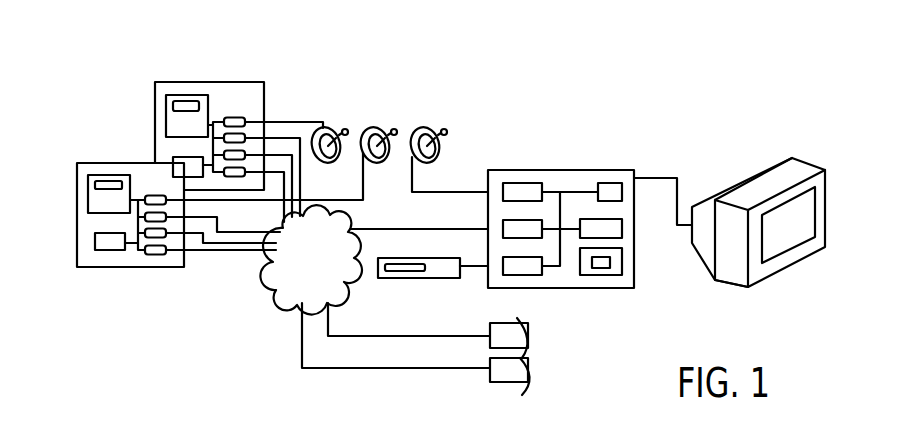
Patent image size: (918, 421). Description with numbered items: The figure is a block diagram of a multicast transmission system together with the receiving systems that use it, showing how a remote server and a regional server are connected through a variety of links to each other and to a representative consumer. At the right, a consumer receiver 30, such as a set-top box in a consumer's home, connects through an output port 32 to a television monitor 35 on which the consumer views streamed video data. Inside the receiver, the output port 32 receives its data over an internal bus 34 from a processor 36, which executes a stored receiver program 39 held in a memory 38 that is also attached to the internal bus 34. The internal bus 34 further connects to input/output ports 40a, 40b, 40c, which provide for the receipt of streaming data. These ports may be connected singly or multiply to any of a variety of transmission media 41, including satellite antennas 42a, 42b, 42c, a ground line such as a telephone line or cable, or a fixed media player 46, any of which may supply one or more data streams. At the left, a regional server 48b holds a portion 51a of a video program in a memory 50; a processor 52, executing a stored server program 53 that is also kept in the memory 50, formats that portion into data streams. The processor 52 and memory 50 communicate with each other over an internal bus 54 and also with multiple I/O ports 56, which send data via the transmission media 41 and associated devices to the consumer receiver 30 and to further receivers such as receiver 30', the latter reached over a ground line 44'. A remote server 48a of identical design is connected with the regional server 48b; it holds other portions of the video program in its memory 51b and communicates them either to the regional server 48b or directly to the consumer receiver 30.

The consumer receiver 30 is at (568, 235).
The receiver 30' is at (527, 331).
The output port 32 is at (608, 180).
The internal bus 34 is at (560, 250).
The television monitor 35 is at (772, 183).
The processor 36 is at (634, 228).
The memory 38 is at (626, 287).
The stored receiver program 39 is at (601, 270).
The input/output port 40a is at (520, 182).
The input/output port 40b is at (525, 219).
The input/output port 40c is at (520, 276).
The transmission media 41 is at (392, 99).
The satellite antenna 42a is at (333, 130).
The satellite antenna 42b is at (386, 130).
The satellite antenna 42c is at (437, 130).
The ground line 44' is at (409, 334).
The fixed media player 46 is at (420, 280).
The remote server 48a is at (213, 128).
The regional server 48b is at (205, 222).
The memory 50 is at (88, 161).
The portion of a video program 51a is at (107, 177).
The memory 51b is at (188, 100).
The processor 52 is at (93, 240).
The stored server program 53 is at (108, 246).
The internal bus 54 is at (137, 228).
The I/O ports 56 is at (106, 251).